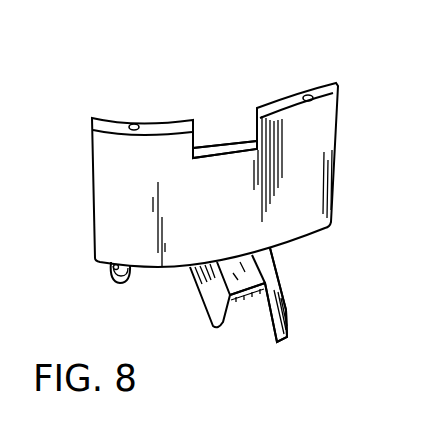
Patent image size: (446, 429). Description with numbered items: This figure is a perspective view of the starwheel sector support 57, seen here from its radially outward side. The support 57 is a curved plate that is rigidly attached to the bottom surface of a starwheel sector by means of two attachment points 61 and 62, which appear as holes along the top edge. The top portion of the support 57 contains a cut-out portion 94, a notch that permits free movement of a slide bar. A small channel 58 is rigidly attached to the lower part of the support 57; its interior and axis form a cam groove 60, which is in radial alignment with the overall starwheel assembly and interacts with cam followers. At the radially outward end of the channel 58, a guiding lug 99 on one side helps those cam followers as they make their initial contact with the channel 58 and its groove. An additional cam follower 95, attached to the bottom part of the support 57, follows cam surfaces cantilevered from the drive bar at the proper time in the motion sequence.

The starwheel sector support 57 is at (254, 218).
The channel 58 is at (273, 277).
The cam groove 60 is at (237, 307).
The attachment point 61 is at (133, 124).
The attachment point 62 is at (307, 94).
The cut-out portion 94 is at (233, 152).
The cam follower 95 is at (117, 284).
The guiding lug 99 is at (287, 308).